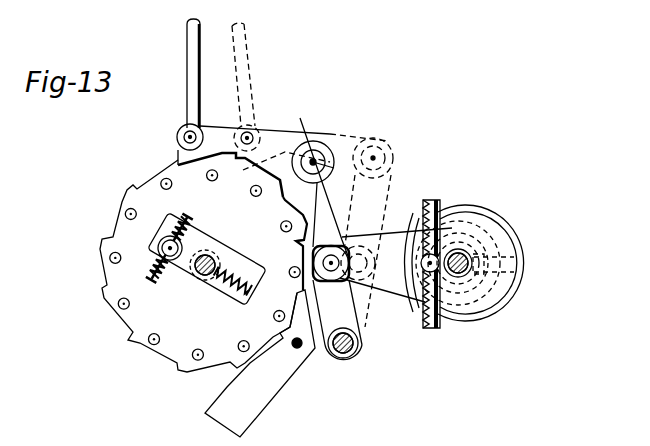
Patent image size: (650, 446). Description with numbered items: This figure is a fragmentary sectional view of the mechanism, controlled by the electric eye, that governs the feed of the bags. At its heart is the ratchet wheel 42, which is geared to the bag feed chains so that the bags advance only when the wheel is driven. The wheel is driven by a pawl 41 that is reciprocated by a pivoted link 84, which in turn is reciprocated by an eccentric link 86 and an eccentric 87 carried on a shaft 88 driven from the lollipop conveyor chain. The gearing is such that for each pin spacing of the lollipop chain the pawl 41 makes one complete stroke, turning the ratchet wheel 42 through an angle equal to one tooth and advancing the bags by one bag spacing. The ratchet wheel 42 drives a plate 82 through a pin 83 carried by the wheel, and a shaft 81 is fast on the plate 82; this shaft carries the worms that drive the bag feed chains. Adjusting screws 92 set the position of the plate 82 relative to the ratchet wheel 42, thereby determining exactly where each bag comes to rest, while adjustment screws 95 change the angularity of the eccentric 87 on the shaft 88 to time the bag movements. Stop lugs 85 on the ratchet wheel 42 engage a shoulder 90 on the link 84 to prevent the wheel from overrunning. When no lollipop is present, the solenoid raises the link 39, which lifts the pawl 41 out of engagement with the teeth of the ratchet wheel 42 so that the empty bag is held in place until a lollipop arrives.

The link 39 is at (188, 69).
The pawl 41 is at (318, 146).
The ratchet wheel 42 is at (147, 195).
The shaft 81 is at (200, 276).
The plate 82 is at (197, 236).
The pin 83 is at (160, 247).
The pivoted link 84 is at (322, 205).
The stop lugs 85 is at (290, 244).
The eccentric link 86 is at (374, 294).
The eccentric 87 is at (503, 211).
The shaft 88 is at (466, 259).
The shoulder 90 is at (279, 223).
The adjusting screws 92 is at (197, 196).
The adjustment screws 95 is at (436, 200).